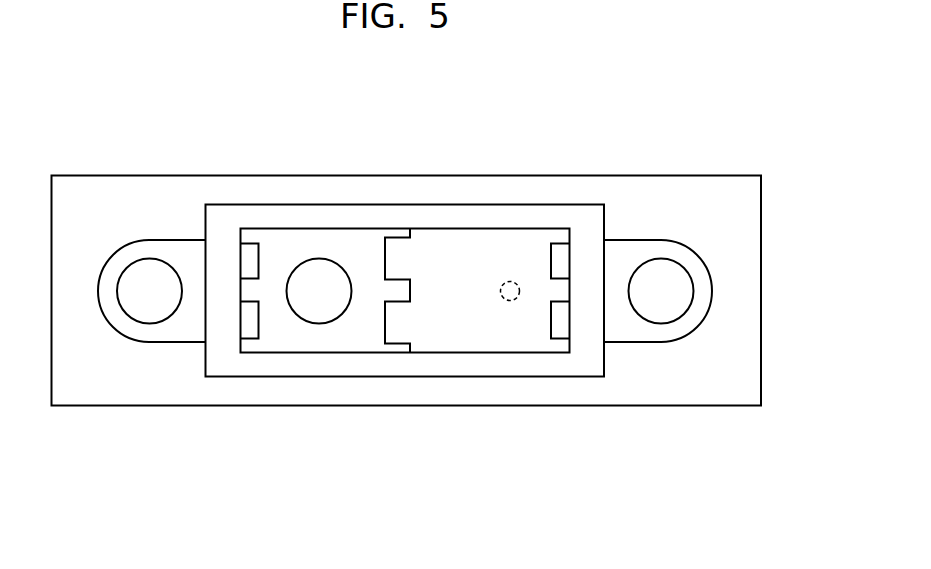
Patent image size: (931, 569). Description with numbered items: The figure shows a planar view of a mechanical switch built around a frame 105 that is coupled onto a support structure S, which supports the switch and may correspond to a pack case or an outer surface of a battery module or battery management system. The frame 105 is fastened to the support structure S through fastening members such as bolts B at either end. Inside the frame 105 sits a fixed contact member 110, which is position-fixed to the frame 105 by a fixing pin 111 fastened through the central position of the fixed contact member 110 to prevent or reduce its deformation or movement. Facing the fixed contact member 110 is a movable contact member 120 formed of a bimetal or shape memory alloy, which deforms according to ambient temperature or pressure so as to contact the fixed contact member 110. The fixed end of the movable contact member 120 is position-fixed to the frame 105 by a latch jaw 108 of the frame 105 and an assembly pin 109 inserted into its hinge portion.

The support structure S is at (755, 285).
The bolt B is at (150, 268).
The frame 105 is at (558, 364).
The latch jaw 108 is at (560, 250).
The assembly pin 109 is at (512, 282).
The fixed contact member 110 is at (318, 343).
The fixing pin 111 is at (318, 268).
The movable contact member 120 is at (474, 343).